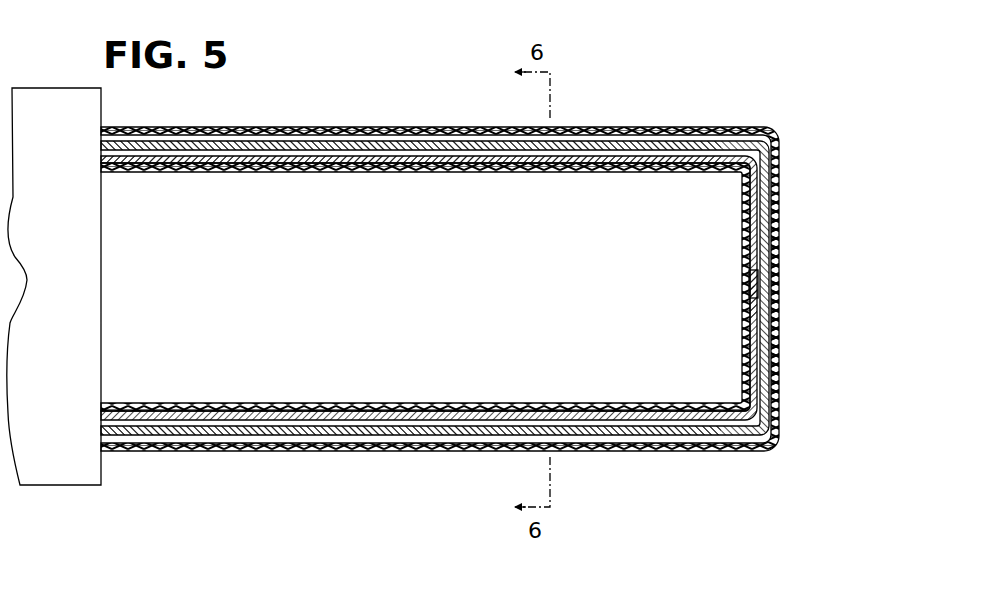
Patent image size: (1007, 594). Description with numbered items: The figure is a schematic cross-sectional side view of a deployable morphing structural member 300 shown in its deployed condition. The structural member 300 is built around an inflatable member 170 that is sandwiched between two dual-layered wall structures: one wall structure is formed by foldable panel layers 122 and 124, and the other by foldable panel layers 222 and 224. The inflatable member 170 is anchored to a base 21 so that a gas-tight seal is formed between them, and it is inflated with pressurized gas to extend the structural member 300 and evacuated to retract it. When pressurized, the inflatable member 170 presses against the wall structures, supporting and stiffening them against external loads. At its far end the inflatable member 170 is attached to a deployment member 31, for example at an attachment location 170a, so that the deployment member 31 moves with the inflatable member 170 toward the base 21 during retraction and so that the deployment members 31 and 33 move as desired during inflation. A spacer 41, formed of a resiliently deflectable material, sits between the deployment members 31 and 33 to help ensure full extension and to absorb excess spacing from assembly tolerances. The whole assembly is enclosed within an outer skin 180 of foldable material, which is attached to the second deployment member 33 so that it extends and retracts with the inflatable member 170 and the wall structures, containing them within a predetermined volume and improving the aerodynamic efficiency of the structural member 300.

The base 21 is at (60, 427).
The deployment member 31 is at (762, 212).
The deployment member 33 is at (777, 356).
The spacer 41 is at (758, 280).
The foldable panel layer 122 is at (422, 157).
The foldable panel layer 124 is at (573, 140).
The inflatable member 170 is at (400, 410).
The attachment location 170a is at (756, 286).
The outer skin 180 is at (612, 451).
The foldable panel layer 222 is at (280, 415).
The foldable panel layer 224 is at (327, 435).
The morphing structural member 300 is at (788, 136).